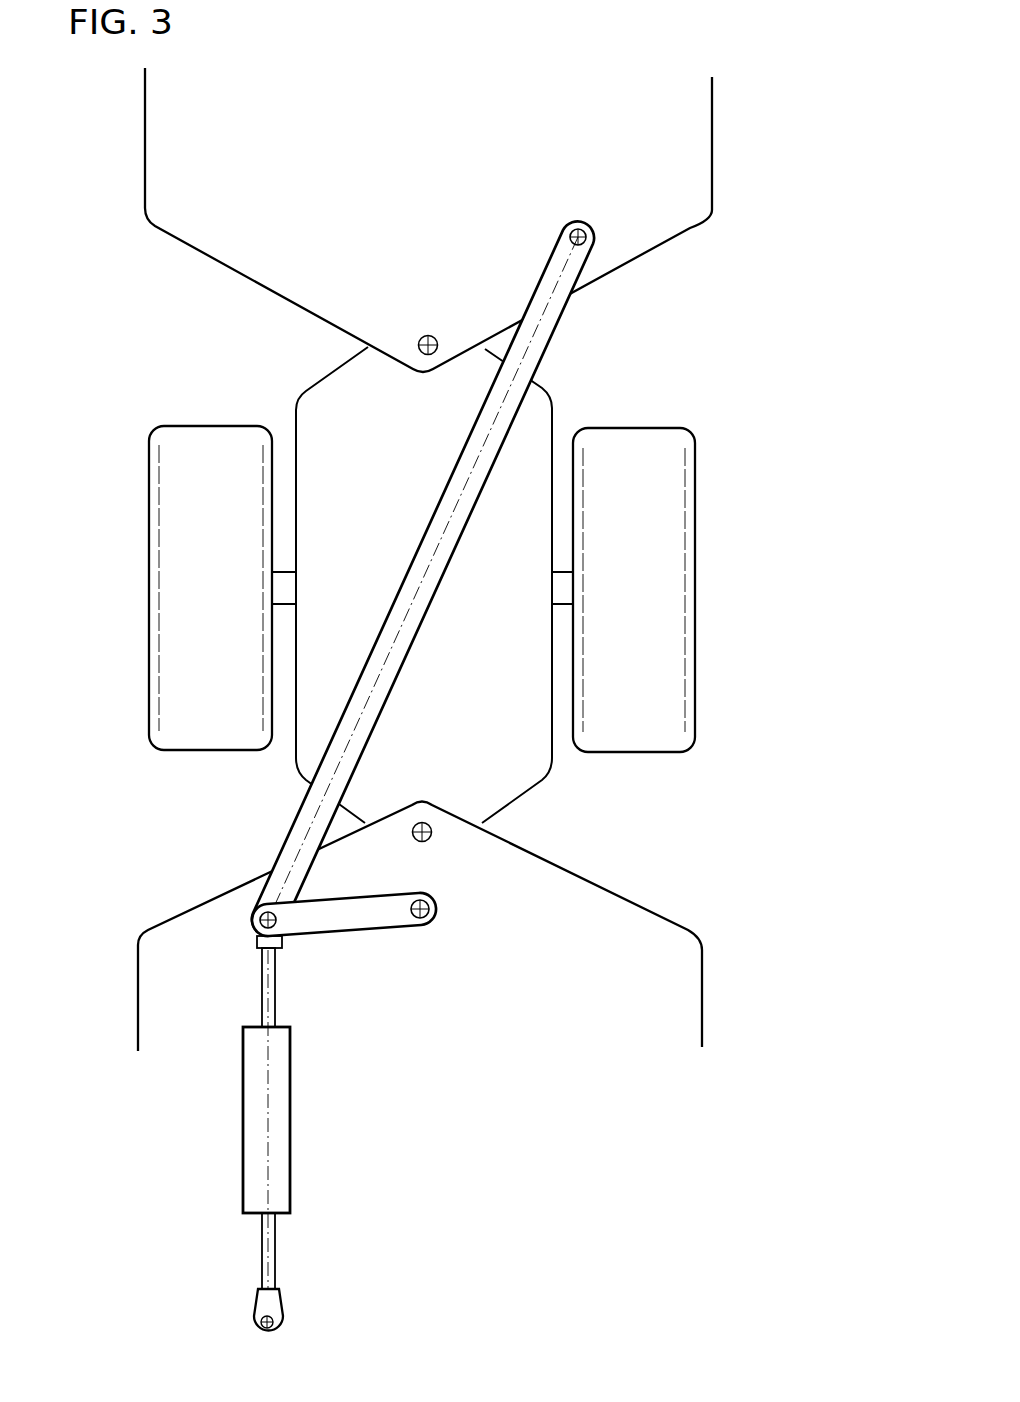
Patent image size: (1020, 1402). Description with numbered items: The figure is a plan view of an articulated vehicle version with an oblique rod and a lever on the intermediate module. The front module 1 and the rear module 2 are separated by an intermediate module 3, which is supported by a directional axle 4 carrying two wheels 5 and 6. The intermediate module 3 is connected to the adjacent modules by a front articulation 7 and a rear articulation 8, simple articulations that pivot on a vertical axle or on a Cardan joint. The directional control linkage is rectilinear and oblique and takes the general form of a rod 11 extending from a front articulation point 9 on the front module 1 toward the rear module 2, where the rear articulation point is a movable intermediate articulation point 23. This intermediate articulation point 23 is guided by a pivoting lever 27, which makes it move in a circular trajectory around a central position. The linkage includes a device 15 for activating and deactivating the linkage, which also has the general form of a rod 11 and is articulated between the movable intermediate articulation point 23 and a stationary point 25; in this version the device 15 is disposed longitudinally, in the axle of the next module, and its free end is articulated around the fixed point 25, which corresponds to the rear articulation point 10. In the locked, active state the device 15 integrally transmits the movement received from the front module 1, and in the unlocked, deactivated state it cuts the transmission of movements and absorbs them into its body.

The front module 1 is at (195, 214).
The rear module 2 is at (653, 945).
The intermediate module 3 is at (507, 769).
The directional axle 4 is at (562, 588).
The wheel 5 is at (188, 611).
The wheel 6 is at (638, 652).
The front articulation 7 is at (394, 327).
The rear articulation 8 is at (462, 848).
The front articulation point 9 is at (593, 238).
The rear articulation point 10 is at (352, 1310).
The rod 11 is at (396, 1113).
The device for activating and deactivating the linkage 15 is at (328, 1122).
The intermediate articulation point 23 is at (256, 910).
The stationary point 25 is at (290, 1325).
The pivoting lever 27 is at (380, 913).